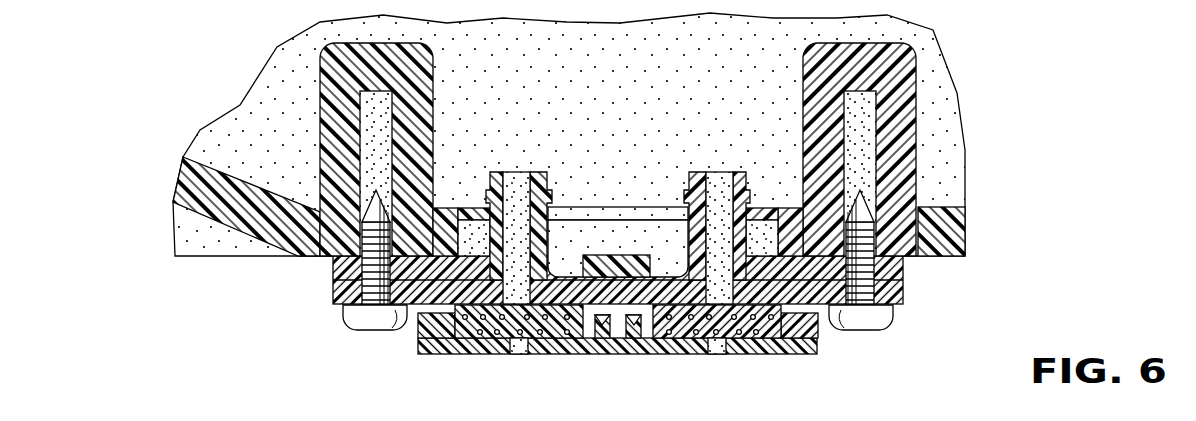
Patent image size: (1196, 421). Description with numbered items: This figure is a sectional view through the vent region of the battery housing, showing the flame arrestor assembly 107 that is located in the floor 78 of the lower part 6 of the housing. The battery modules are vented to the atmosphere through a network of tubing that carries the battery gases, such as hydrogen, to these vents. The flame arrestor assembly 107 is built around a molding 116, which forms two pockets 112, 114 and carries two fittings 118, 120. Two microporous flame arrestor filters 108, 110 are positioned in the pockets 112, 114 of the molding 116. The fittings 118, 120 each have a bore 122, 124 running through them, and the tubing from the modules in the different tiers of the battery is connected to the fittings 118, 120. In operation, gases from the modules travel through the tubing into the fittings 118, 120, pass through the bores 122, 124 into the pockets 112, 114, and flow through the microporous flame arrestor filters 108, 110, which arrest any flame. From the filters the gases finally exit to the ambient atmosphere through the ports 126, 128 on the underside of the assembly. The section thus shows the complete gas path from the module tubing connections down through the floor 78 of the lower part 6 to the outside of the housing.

The lower part 6 is at (170, 243).
The floor 78 is at (945, 206).
The flame arrestor assembly 107 is at (555, 362).
The microporous flame arrestor filter 108 is at (483, 323).
The microporous flame arrestor filter 110 is at (743, 330).
The pocket 112 is at (575, 324).
The pocket 114 is at (645, 327).
The molding 116 is at (818, 310).
The fitting 118 is at (499, 171).
The fitting 120 is at (738, 170).
The bore 122 is at (528, 170).
The bore 124 is at (707, 170).
The port 126 is at (522, 350).
The port 128 is at (717, 350).